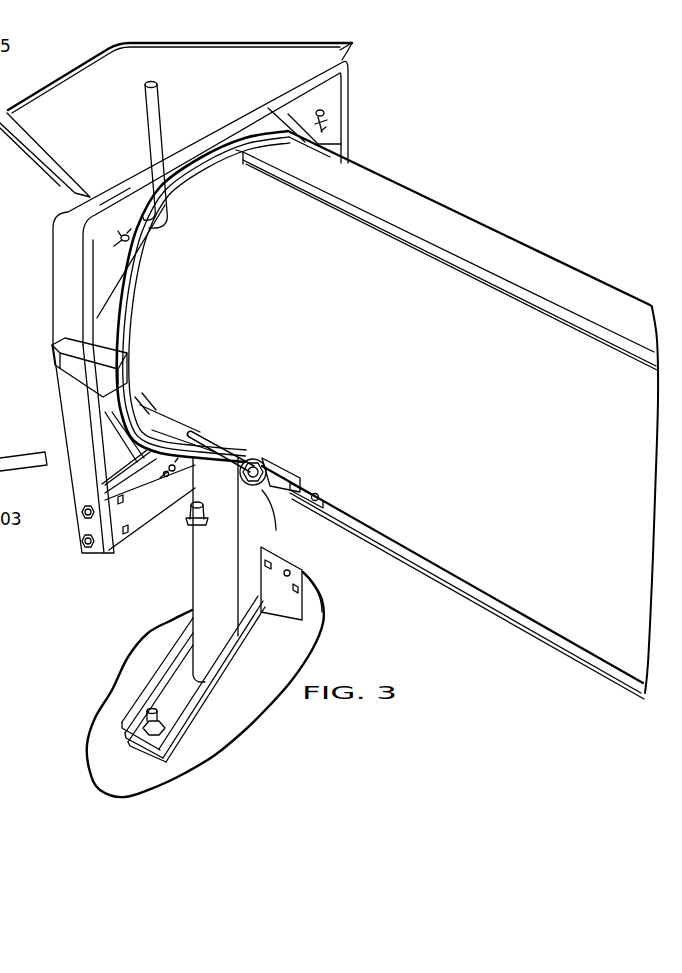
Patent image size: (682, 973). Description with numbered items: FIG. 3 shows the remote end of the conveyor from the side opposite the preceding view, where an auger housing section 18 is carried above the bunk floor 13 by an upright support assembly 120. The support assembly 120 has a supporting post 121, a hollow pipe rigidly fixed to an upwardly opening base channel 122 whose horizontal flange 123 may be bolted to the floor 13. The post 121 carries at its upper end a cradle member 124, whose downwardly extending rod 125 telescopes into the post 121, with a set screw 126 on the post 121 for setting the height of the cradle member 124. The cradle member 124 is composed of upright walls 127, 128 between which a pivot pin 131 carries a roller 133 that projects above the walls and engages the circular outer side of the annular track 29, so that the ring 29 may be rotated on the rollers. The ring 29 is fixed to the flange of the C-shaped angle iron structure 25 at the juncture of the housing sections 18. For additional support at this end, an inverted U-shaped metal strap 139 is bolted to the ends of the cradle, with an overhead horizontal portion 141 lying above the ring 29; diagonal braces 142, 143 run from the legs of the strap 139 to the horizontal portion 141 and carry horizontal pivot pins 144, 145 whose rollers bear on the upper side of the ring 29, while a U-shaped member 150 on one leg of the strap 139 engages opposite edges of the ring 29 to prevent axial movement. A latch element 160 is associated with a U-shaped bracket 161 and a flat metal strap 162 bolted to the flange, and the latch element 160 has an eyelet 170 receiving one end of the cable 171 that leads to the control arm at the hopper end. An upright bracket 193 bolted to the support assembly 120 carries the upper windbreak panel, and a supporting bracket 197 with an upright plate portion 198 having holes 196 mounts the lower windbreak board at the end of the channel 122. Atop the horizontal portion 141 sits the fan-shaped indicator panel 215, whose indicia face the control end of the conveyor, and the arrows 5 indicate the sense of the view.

The arrow direction indicator 5 is at (133, 399).
The bunk floor 13 is at (238, 714).
The auger housing section 18 is at (443, 276).
The angle iron structure 25 is at (136, 349).
The annular track 29 is at (107, 318).
The upright support assembly 120 is at (182, 570).
The supporting post 121 is at (198, 578).
The base channel 122 is at (172, 662).
The horizontal flange 123 is at (173, 703).
The cradle member 124 is at (176, 500).
The rod 125 is at (247, 463).
The set screw 126 is at (193, 521).
The upright wall 127 is at (203, 476).
The upright wall 128 is at (118, 479).
The pivot pin 131 is at (162, 484).
The roller 133 is at (143, 456).
The inverted U-shaped metal strap 139 is at (82, 400).
The overhead horizontal portion 141 is at (215, 135).
The diagonal brace 142 is at (125, 203).
The diagonal brace 143 is at (307, 96).
The horizontal pivot pin 144 is at (130, 240).
The horizontal pivot pin 145 is at (327, 120).
The U-shaped member 150 is at (62, 371).
The latch element 160 is at (222, 463).
The U-shaped bracket 161 is at (175, 428).
The flat metal strap 162 is at (149, 409).
The eyelet 170 is at (273, 475).
The cable 171 is at (396, 544).
The upright bracket 193 is at (0, 300).
The hole 196 is at (312, 583).
The supporting bracket 197 is at (250, 706).
The upright plate portion 198 is at (288, 558).
The indicator panel 215 is at (358, 52).